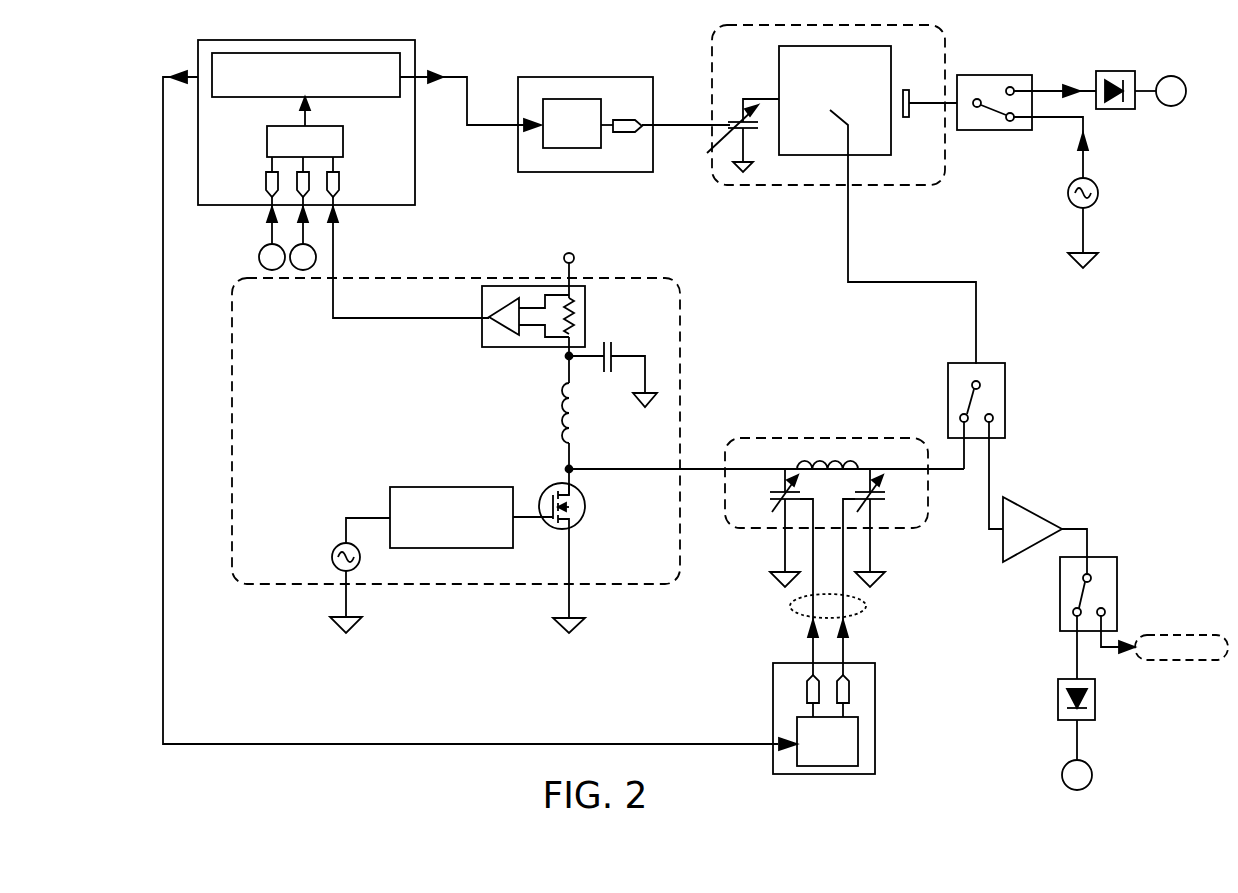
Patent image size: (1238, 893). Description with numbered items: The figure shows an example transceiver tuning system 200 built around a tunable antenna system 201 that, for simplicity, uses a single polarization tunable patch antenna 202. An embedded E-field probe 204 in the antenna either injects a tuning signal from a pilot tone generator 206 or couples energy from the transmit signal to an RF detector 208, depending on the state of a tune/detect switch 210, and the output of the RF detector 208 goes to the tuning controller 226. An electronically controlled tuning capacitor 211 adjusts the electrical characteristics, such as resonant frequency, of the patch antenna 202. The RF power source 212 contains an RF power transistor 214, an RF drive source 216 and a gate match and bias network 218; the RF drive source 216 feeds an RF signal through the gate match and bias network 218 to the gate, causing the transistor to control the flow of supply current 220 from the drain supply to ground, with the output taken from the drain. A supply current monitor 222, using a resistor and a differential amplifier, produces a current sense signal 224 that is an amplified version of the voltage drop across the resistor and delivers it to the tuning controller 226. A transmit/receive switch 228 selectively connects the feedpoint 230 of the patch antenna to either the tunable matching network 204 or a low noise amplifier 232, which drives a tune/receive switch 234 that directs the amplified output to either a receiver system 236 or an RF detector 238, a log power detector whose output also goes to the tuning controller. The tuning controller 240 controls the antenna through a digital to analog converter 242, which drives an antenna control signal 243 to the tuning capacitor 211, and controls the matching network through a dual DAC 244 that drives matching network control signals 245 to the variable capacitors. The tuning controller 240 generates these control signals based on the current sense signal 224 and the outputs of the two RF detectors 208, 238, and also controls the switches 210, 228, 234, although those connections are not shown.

The transceiver tuning system 200 is at (103, 48).
The tunable antenna system 201 is at (820, 187).
The single polarization tunable patch antenna 202 is at (788, 72).
The embedded E-field probe / tunable matching network 204 is at (912, 87).
The pilot tone generator 206 is at (1068, 200).
The RF detector 208 is at (1120, 105).
The tune/detect switch 210 is at (983, 123).
The electronically controlled tuning capacitor 211 is at (724, 137).
The RF power source 212 is at (252, 330).
The RF power transistor 214 is at (545, 483).
The RF drive source 216 is at (335, 545).
The gate match and bias network 218 is at (438, 487).
The supply current 220 is at (551, 368).
The supply current monitor 222 is at (478, 337).
The current sense signal 224 is at (363, 318).
The tuning controller 226 is at (408, 197).
The transmit/receive (T/R) switch 228 is at (998, 373).
The feedpoint 230 is at (825, 128).
The low noise amplifier (LNA) 232 is at (1023, 512).
The tune/receive switch 234 is at (1105, 580).
The receiver system 236 is at (1167, 662).
The RF detector 238 is at (1058, 705).
The tuning controller 240 is at (347, 97).
The digital to analog converter (DAC) 242 is at (560, 82).
The antenna control signal 243 is at (684, 123).
The dual DAC 244 is at (778, 705).
The matching network control signals 245 is at (792, 607).